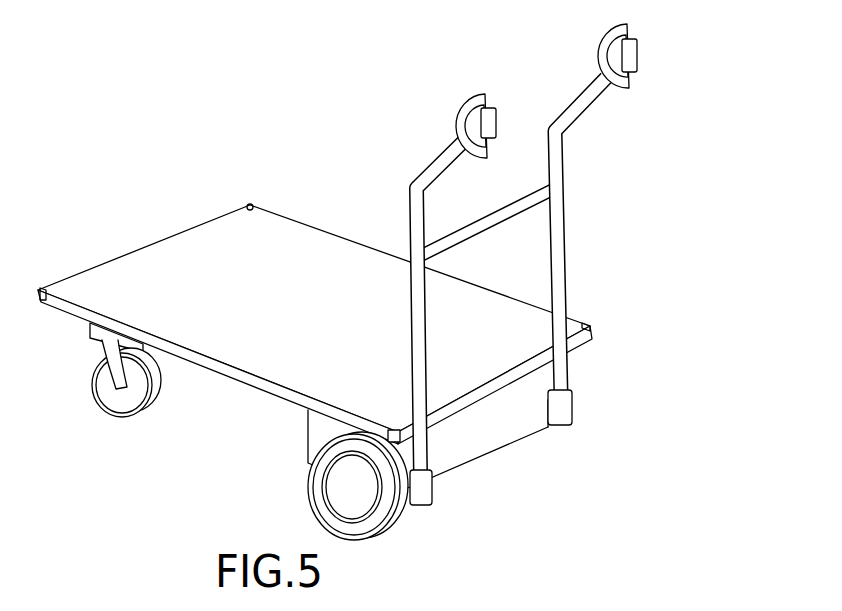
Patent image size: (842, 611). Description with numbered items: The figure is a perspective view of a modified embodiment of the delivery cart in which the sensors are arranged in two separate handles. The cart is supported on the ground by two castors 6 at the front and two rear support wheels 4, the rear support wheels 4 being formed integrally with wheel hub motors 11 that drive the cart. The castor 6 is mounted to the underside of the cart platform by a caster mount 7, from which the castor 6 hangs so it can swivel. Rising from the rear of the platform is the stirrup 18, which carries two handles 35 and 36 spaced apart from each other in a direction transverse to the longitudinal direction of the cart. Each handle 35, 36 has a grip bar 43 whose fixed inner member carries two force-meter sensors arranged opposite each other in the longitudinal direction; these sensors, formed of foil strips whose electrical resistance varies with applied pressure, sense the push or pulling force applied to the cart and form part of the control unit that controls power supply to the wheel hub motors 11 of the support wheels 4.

The rear support wheel 4 is at (374, 494).
The castor 6 is at (130, 399).
The caster mount 7 is at (106, 363).
The wheel hub motor 11 is at (360, 498).
The stirrup 18 is at (578, 250).
The handle 35 is at (505, 100).
The handle 36 is at (651, 40).
The grip bar 43 is at (497, 132).